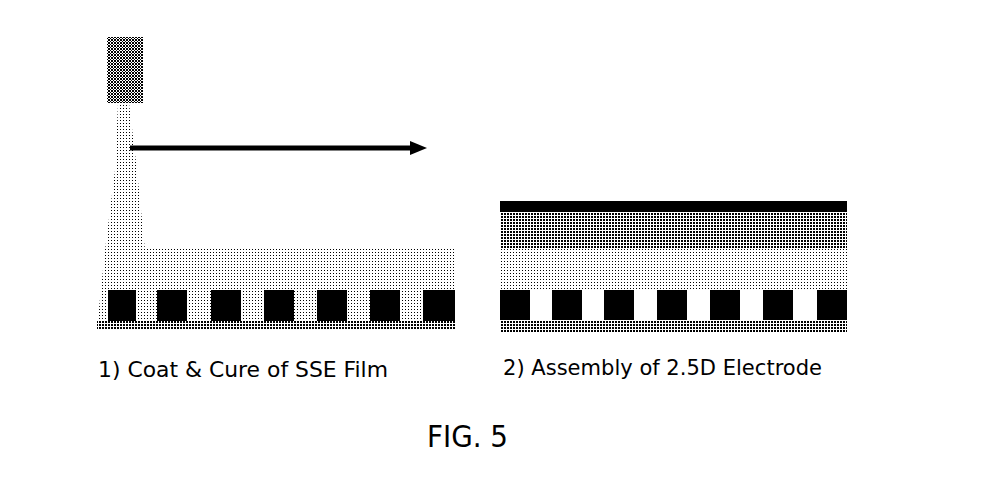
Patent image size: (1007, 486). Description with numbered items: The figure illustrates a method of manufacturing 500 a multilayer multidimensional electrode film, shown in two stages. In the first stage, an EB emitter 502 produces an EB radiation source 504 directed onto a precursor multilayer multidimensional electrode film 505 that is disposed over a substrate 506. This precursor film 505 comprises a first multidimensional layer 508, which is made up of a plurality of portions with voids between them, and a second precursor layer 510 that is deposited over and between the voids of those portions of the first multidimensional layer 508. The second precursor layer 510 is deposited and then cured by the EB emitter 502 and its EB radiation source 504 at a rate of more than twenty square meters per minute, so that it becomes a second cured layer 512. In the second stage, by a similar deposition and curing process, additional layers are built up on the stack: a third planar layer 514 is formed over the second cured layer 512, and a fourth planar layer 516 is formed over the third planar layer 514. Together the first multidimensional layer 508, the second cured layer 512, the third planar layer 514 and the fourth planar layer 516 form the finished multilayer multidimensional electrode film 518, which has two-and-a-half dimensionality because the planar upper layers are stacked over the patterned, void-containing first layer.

The method of manufacturing 500 is at (709, 171).
The EB emitter 502 is at (318, 68).
The EB radiation source 504 is at (120, 185).
The precursor multilayer multidimensional electrode film 505 is at (260, 219).
The substrate 506 is at (112, 323).
The first multidimensional layer 508 is at (88, 303).
The second precursor layer 510 is at (352, 257).
The second cured layer 512 is at (838, 278).
The third planar layer 514 is at (847, 233).
The fourth planar layer 516 is at (848, 203).
The multilayer multidimensional electrode film 518 is at (709, 202).